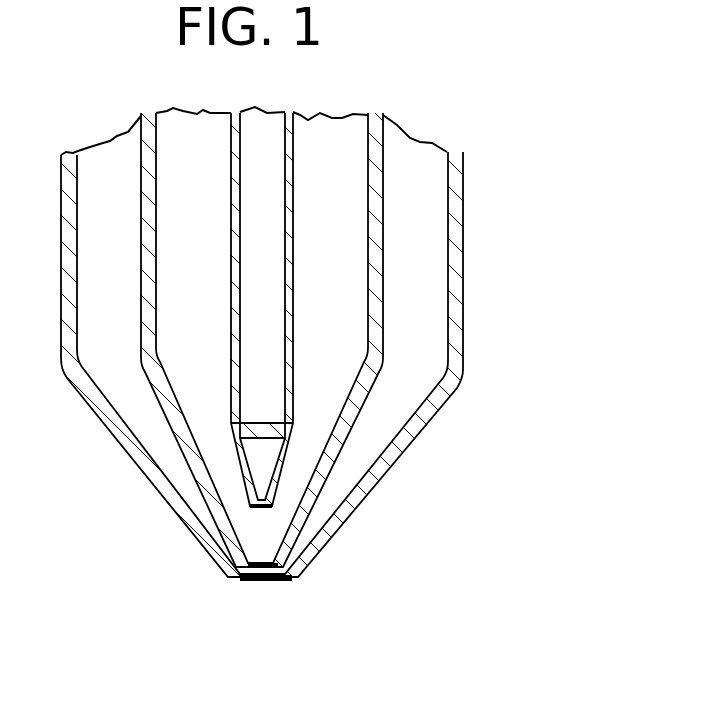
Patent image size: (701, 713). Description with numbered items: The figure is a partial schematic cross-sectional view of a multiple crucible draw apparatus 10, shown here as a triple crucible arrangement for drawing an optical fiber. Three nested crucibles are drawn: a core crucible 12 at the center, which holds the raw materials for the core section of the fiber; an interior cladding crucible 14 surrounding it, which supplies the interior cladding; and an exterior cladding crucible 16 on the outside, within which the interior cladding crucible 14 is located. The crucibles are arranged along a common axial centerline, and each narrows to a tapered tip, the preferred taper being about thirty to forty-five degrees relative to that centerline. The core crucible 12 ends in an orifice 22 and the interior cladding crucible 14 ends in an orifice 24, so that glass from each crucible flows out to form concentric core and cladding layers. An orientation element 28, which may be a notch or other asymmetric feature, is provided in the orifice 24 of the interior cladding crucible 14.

The multiple crucible draw apparatus 10 is at (350, 356).
The core crucible 12 is at (350, 356).
The interior cladding crucible 14 is at (350, 356).
The exterior cladding crucible 16 is at (350, 356).
The orifice 22 is at (260, 507).
The orifice 24 is at (252, 567).
The orientation element 28 is at (263, 582).